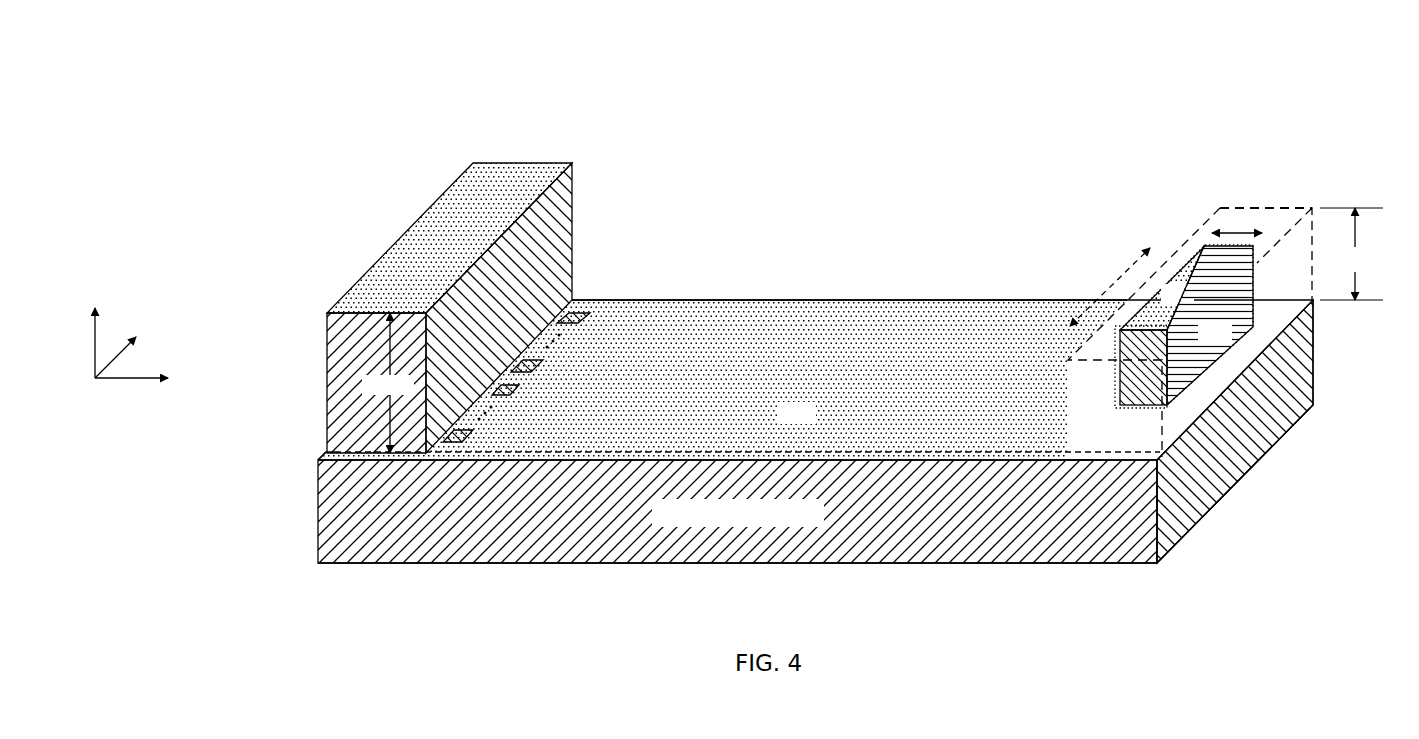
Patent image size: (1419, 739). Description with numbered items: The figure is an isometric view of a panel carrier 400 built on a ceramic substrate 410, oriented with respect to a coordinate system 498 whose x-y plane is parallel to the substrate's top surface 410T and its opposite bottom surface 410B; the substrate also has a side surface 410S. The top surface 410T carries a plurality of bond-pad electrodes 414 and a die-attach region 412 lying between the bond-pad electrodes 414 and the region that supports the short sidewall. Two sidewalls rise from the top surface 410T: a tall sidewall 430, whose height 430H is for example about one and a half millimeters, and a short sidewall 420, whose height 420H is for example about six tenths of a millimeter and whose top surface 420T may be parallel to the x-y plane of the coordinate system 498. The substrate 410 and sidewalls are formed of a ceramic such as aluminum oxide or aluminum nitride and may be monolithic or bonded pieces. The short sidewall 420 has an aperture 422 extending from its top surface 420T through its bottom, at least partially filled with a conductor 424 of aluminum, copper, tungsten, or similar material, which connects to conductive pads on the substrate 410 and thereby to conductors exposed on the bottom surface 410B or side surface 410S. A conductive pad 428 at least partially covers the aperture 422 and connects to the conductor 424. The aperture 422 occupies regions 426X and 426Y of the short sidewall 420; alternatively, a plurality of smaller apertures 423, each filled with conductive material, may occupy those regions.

The panel carrier 400 is at (279, 100).
The coordinate system 498 is at (177, 288).
The substrate 410 is at (815, 431).
The top surface 410T is at (913, 288).
The bottom surface 410B is at (908, 568).
The side surface 410S is at (1145, 552).
The die-attach region 412 is at (740, 450).
The bond-pad electrodes 414 is at (520, 374).
The tall sidewall 430 is at (573, 164).
The height of tall sidewall 430H is at (388, 383).
The short sidewall 420 is at (1199, 227).
The top surface of short sidewall 420T is at (1293, 204).
The height of short sidewall 420H is at (1353, 254).
The aperture 422 is at (1138, 407).
The apertures 423 is at (1192, 243).
The conductor 424 is at (1210, 325).
The region in x direction 426X is at (1228, 205).
The region in y direction 426Y is at (1110, 287).
The conductive pad 428 is at (1186, 287).